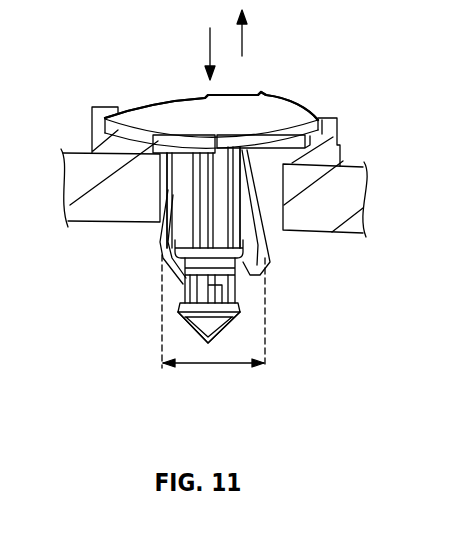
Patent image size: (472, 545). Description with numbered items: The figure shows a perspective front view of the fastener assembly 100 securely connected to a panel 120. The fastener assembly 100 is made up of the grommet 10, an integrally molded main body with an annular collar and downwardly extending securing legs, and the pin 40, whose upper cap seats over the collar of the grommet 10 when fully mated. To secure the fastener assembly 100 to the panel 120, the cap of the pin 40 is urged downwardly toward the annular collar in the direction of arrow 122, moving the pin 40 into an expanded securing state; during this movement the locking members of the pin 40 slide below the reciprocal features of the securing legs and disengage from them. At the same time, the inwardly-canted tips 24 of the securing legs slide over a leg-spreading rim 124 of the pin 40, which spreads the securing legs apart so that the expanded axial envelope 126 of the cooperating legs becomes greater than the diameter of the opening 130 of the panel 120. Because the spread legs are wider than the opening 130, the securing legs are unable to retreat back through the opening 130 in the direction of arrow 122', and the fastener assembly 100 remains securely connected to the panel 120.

The grommet 10 is at (348, 133).
The inwardly-canted tip 24 is at (174, 284).
The pin 40 is at (259, 94).
The fastener assembly 100 is at (106, 80).
The panel 120 is at (78, 224).
The arrow 122 is at (176, 49).
The arrow 122' is at (279, 31).
The leg-spreading rim 124 is at (176, 318).
The expanded axial envelope 126 is at (213, 364).
The opening 130 is at (170, 188).